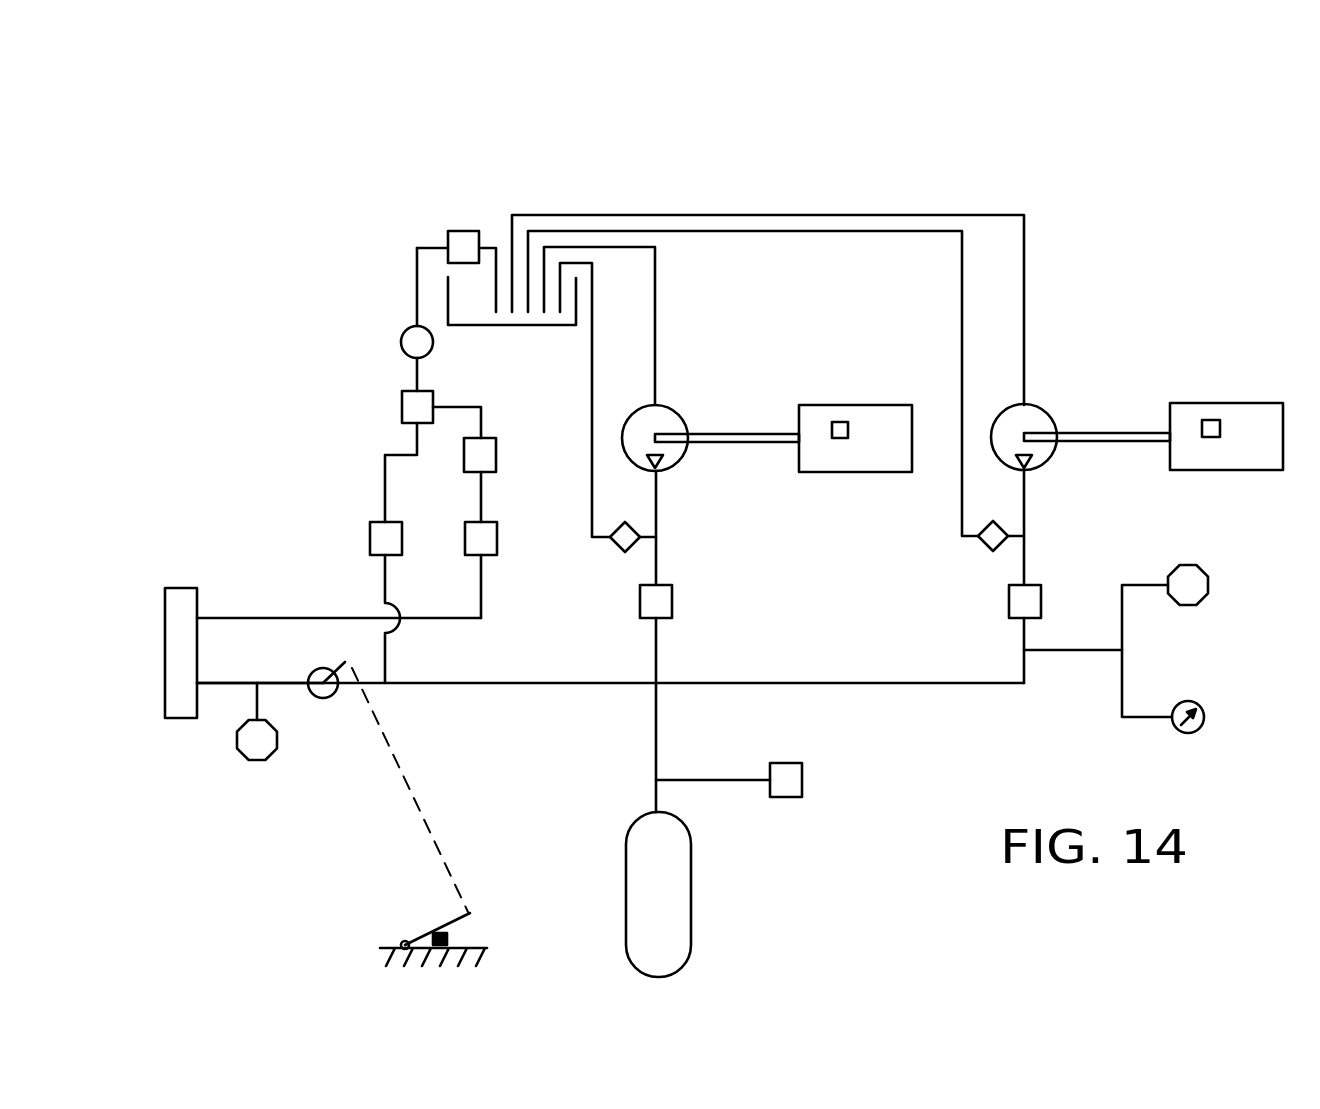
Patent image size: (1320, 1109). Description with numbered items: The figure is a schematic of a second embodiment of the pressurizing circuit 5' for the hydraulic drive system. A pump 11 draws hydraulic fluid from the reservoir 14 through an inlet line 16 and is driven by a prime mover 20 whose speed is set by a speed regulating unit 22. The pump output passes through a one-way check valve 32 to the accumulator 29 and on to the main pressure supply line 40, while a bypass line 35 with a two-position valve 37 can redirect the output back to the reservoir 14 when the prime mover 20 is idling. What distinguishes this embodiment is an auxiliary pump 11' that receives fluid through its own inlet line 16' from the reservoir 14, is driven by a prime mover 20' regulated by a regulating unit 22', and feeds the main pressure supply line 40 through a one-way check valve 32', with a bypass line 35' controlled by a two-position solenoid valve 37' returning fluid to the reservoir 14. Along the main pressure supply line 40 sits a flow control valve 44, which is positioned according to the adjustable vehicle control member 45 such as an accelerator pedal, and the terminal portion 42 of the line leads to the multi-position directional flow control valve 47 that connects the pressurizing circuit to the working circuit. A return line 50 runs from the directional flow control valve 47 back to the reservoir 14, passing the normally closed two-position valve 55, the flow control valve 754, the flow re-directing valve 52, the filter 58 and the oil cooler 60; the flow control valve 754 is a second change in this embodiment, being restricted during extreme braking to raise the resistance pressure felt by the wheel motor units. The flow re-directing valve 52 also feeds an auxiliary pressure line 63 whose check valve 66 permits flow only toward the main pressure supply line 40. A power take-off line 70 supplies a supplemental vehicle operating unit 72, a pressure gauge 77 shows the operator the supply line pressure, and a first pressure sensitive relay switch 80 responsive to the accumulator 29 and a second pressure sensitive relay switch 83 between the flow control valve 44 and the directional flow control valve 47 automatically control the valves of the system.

The pressurizing circuit 5' is at (942, 158).
The oil cooler 60 is at (468, 230).
The filter 58 is at (400, 342).
The flow re-directing valve 52 is at (402, 405).
The auxiliary pressure line 63 is at (385, 482).
The flow control valve 754 is at (484, 453).
The two-position valve 55 is at (483, 533).
The check valve 66 is at (370, 542).
The return line 50 is at (363, 618).
The directional flow control valve 47 is at (197, 596).
The terminal portion 42 is at (213, 682).
The main pressure supply line 40 is at (443, 683).
The flow control valve 44 is at (330, 700).
The second pressure sensitive relay switch 83 is at (263, 743).
The adjustable vehicle control member 45 is at (492, 907).
The reservoir 14 is at (483, 328).
The inlet line 16 is at (636, 326).
The inlet line 16' is at (809, 310).
The bypass line 35 is at (592, 400).
The bypass line 35' is at (776, 383).
The two-position valve 37 is at (609, 562).
The two-position solenoid valve 37' is at (944, 548).
The pump 11 is at (710, 456).
The prime mover 20 is at (848, 397).
The speed regulating unit 22 is at (859, 390).
The one-way check valve 32 is at (697, 683).
The accumulator 29 is at (672, 902).
The power take-off line 70 is at (698, 780).
The supplemental vehicle operating unit 72 is at (793, 778).
The auxiliary pump 11' is at (1080, 465).
The prime mover 20' is at (1221, 392).
The regulating unit 22' is at (1234, 392).
The one-way check valve 32' is at (976, 634).
The first pressure sensitive relay switch 80 is at (1208, 587).
The pressure gauge 77 is at (1205, 715).